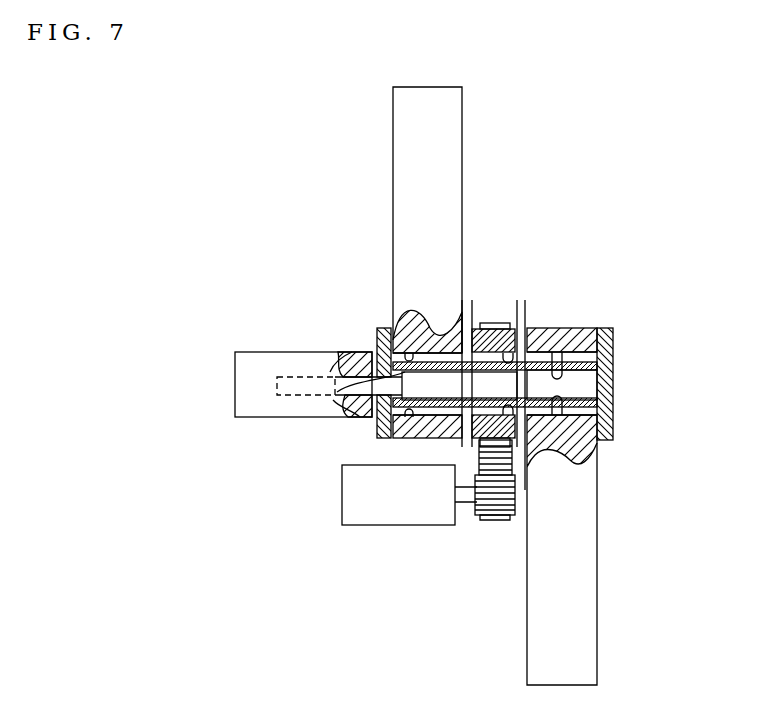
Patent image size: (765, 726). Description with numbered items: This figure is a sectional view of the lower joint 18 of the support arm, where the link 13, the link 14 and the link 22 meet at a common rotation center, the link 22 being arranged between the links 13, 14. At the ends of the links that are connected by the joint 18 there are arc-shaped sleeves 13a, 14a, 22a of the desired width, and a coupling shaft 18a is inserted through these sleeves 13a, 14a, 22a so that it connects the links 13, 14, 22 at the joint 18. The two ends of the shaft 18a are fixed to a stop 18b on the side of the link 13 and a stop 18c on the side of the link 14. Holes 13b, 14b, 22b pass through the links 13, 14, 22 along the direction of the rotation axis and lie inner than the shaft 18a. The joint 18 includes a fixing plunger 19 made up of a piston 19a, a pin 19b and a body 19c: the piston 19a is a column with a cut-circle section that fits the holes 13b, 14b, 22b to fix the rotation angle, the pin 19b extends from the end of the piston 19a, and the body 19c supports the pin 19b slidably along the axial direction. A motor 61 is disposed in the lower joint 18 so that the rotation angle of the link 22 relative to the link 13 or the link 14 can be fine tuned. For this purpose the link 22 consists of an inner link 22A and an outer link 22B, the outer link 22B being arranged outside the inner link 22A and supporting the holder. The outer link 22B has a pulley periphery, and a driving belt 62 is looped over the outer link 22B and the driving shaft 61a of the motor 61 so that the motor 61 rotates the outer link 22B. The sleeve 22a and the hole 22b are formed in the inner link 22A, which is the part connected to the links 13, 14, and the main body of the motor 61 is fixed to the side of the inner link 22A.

The link 13 is at (393, 180).
The sleeve 13a is at (410, 312).
The hole 13b is at (358, 416).
The link 14 is at (527, 605).
The sleeve 14a is at (555, 345).
The hole 14b is at (560, 372).
The joint 18 is at (357, 298).
The coupling shaft 18a is at (598, 330).
The stop 18b is at (380, 340).
The stop 18c is at (613, 362).
The fixing plunger 19 is at (280, 351).
The piston 19a is at (437, 392).
The pin 19b is at (352, 377).
The body 19c is at (268, 418).
The link 22 is at (469, 320).
The inner link 22A is at (478, 323).
The outer link 22B is at (500, 322).
The sleeve 22a is at (513, 322).
The hole 22b is at (521, 345).
The motor 61 is at (355, 527).
The motor shaft 61a is at (465, 503).
The driving belt 62 is at (524, 478).